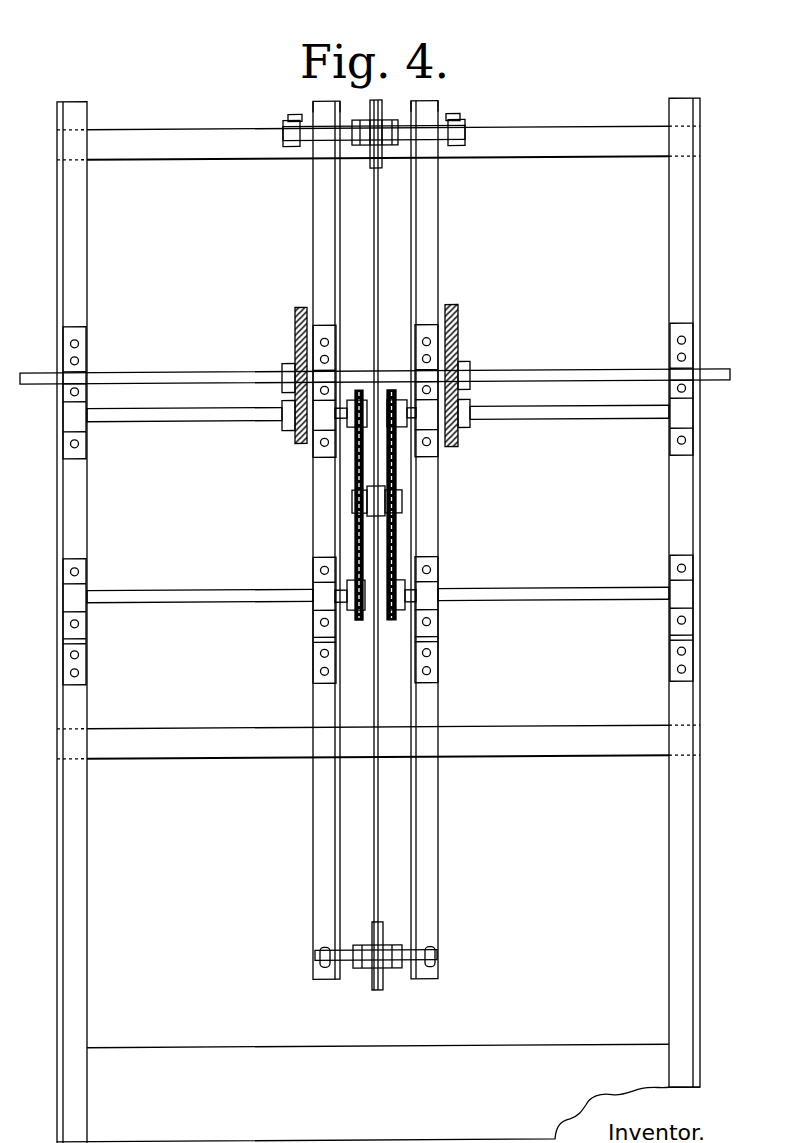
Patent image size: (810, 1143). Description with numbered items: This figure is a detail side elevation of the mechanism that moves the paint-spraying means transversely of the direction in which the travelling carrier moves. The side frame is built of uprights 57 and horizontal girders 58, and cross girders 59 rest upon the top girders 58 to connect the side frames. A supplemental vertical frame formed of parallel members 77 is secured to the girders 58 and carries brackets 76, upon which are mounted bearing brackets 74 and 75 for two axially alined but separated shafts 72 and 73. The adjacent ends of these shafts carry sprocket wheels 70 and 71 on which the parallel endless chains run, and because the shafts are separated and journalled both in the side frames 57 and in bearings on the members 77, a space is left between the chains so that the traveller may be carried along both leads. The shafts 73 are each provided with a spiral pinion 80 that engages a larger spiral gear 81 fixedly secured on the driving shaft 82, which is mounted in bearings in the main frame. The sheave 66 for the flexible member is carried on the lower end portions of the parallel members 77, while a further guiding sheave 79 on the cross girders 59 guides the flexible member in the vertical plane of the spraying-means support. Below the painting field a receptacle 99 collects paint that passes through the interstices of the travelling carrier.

The upright 57 is at (57, 810).
The girder 58 is at (560, 131).
The cross girder 59 is at (318, 112).
The sheave 66 is at (383, 980).
The sprocket gear 70 is at (356, 620).
The sprocket gear 71 is at (355, 393).
The shaft 72 is at (265, 601).
The shaft 73 is at (208, 418).
The bearing bracket 74 is at (315, 580).
The bearing bracket 75 is at (323, 440).
The bracket 76 is at (322, 511).
The parallel member 77 is at (318, 810).
The guiding sheave 79 is at (372, 165).
The spiral pinion 80 is at (285, 430).
The spiral gear 81 is at (295, 330).
The driving shaft 82 is at (525, 372).
The receptacle 99 is at (202, 1052).